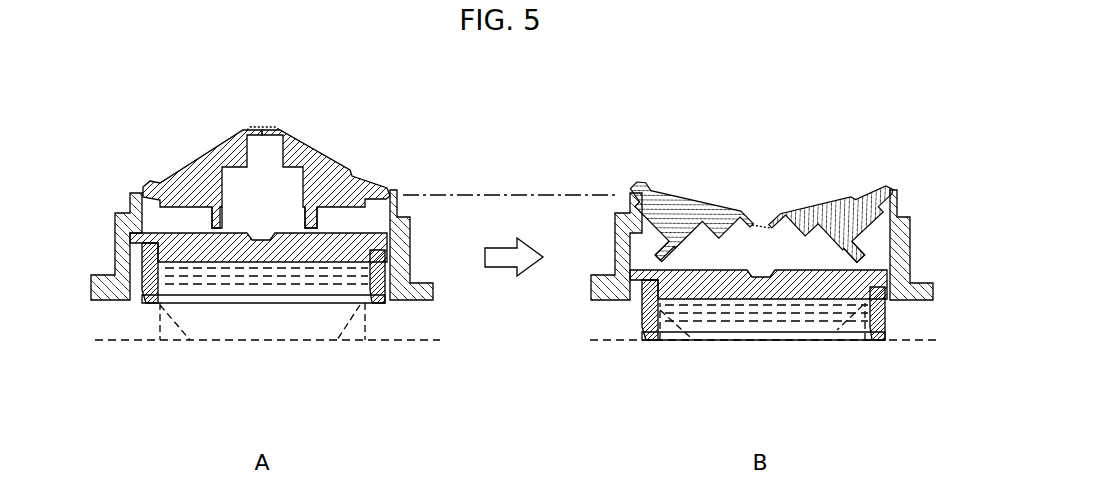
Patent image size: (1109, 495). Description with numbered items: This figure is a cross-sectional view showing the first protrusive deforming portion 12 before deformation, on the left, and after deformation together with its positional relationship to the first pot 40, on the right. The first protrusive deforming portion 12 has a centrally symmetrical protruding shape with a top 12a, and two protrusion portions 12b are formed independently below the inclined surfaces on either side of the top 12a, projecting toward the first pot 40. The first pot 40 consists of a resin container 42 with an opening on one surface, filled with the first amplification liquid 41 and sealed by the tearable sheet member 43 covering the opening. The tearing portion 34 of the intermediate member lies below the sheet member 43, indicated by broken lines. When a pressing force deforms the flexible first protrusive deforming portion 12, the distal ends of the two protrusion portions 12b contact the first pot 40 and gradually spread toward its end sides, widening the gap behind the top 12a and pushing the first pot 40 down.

The first protrusive deforming portion 12 is at (300, 142).
The top 12a is at (264, 127).
The protrusion portions 12b is at (304, 222).
The tearing portion 34 is at (366, 327).
The first pot 40 is at (509, 340).
The first amplification liquid 41 is at (201, 292).
The container 42 is at (153, 306).
The sheet member 43 is at (133, 398).